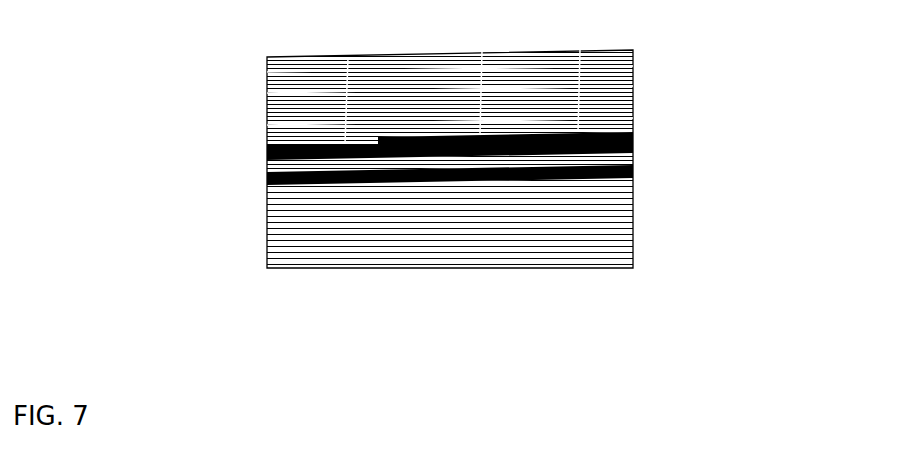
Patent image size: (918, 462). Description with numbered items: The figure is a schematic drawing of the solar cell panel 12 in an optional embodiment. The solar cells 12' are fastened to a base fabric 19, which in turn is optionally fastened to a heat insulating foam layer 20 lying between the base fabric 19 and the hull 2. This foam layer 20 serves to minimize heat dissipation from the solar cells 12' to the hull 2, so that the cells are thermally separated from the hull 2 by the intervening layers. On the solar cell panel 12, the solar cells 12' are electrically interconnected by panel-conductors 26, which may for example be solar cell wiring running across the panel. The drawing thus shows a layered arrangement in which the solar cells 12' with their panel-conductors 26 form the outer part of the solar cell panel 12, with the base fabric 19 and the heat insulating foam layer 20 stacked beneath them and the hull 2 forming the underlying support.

The solar cell panel 12 is at (525, 146).
The solar cells 12' is at (393, 83).
The panel-conductors 26 is at (275, 93).
The base fabric 19 is at (273, 153).
The heat insulating foam layer 20 is at (277, 168).
The hull 2 is at (282, 215).